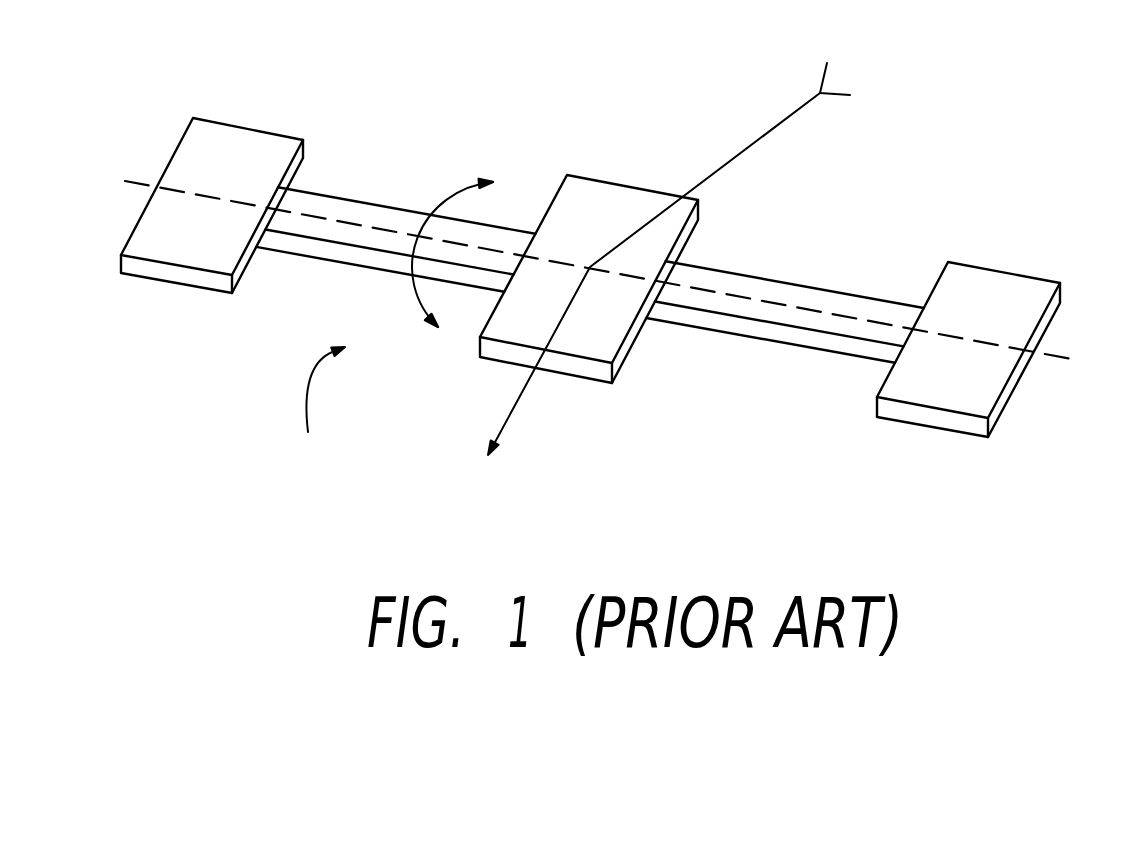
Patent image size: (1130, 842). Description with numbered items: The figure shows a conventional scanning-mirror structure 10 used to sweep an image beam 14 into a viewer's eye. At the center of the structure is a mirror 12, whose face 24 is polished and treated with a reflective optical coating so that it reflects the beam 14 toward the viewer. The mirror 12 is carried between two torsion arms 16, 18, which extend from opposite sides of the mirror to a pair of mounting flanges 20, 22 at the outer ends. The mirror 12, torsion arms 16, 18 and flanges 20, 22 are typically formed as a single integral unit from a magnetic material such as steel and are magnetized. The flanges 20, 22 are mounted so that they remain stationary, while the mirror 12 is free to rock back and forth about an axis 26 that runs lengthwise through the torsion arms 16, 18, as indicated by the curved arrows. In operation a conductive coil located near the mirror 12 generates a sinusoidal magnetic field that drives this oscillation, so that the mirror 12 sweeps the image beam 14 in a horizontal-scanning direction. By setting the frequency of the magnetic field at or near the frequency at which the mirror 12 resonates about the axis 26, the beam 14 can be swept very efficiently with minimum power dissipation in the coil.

The scanning-mirror structure 10 is at (319, 409).
The mirror 12 is at (610, 274).
The image beam 14 is at (525, 393).
The torsion arm 16 is at (400, 212).
The torsion arm 18 is at (732, 262).
The mounting flange 20 is at (248, 127).
The mounting flange 22 is at (1003, 270).
The face 24 is at (605, 325).
The axis 26 is at (1049, 358).